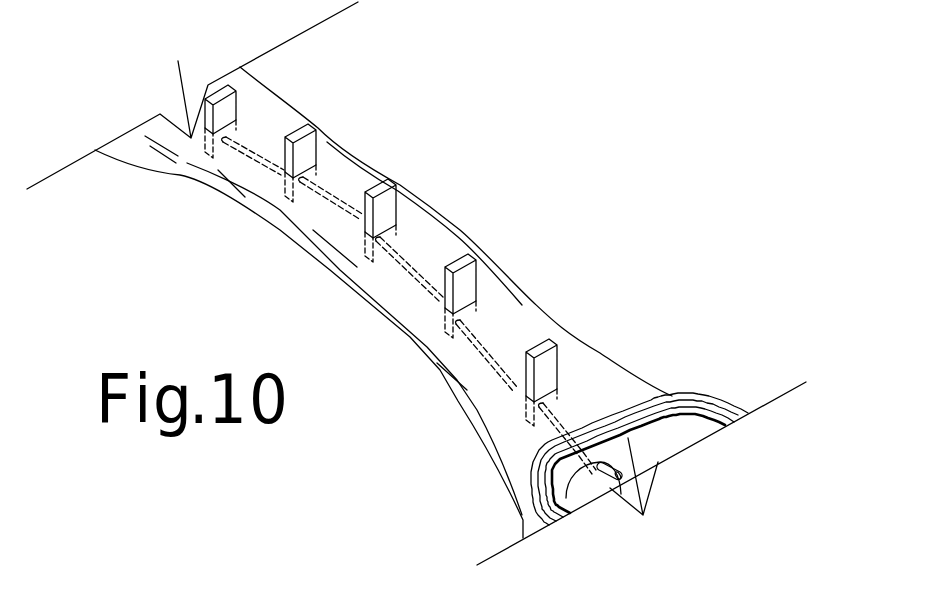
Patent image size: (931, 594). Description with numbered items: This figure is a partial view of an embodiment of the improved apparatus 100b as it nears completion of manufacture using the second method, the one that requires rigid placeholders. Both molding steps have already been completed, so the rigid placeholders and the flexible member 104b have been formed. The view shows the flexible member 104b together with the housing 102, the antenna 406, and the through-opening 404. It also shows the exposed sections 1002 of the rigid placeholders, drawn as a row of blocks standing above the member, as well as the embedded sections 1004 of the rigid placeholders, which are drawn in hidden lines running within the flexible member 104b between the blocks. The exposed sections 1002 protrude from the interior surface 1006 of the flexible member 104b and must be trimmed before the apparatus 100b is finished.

The improved apparatus 100b is at (503, 158).
The housing 102 is at (677, 432).
The flexible member 104b is at (343, 173).
The exposed sections 1002 is at (545, 367).
The embedded sections 1004 is at (537, 410).
The interior surface 1006 is at (382, 272).
The through-opening 404 is at (568, 497).
The antenna 406 is at (610, 492).